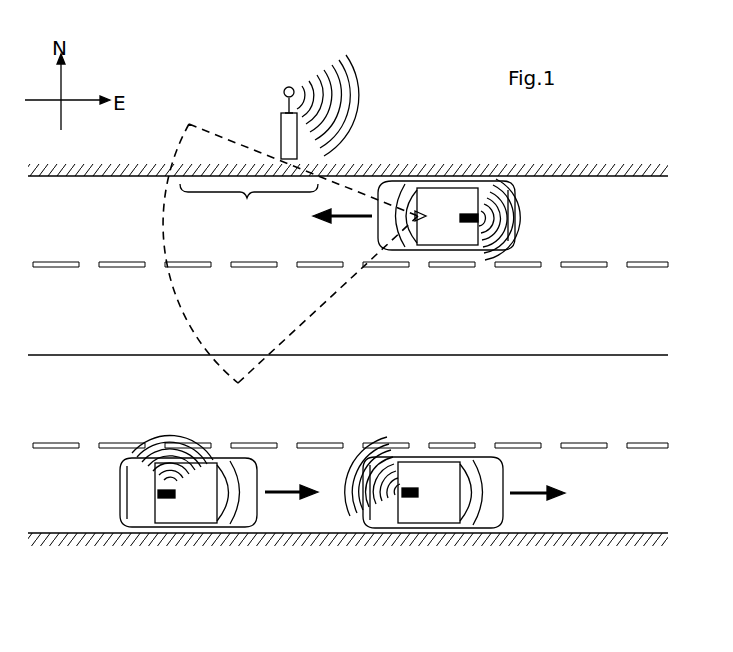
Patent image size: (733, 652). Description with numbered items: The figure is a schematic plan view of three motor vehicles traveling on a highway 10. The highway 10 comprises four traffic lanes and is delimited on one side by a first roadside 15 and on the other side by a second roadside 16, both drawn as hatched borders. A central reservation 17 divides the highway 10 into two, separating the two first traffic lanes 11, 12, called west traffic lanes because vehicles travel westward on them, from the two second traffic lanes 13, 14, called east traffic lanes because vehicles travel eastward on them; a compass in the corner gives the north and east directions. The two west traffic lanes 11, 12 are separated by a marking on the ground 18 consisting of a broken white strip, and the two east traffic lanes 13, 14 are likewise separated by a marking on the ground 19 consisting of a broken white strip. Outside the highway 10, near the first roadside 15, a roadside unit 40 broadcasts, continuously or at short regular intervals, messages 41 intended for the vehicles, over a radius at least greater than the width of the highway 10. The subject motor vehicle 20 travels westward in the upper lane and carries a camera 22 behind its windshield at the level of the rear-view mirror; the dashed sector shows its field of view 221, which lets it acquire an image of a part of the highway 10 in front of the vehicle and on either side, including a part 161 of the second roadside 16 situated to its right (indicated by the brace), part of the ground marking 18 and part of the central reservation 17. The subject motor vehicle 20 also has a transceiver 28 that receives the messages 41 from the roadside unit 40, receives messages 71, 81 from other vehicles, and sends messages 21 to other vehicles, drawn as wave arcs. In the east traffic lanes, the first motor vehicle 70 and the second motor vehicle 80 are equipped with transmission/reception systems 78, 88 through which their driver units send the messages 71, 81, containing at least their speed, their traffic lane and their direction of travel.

The highway 10 is at (57, 553).
The first traffic lane 11 is at (52, 228).
The first traffic lane 12 is at (52, 319).
The second traffic lane 13 is at (52, 405).
The second traffic lane 14 is at (52, 500).
The first roadside 15 is at (568, 535).
The second roadside 16 is at (625, 176).
The central reservation 17 is at (638, 354).
The marking on the ground 18 is at (645, 260).
The marking on the ground 19 is at (652, 442).
The subject motor vehicle 20 is at (515, 199).
The messages 21 is at (520, 230).
The camera 22 is at (420, 208).
The transceiver 28 is at (465, 224).
The roadside unit 40 is at (281, 128).
The messages 41 is at (362, 107).
The first motor vehicle 70 is at (504, 473).
The messages 71 is at (350, 505).
The transmission/reception system 78 is at (418, 500).
The second motor vehicle 80 is at (120, 486).
The messages 81 is at (175, 432).
The transmission/reception system 88 is at (180, 498).
The part of the second roadside 161 is at (249, 206).
The field of view 221 is at (176, 292).